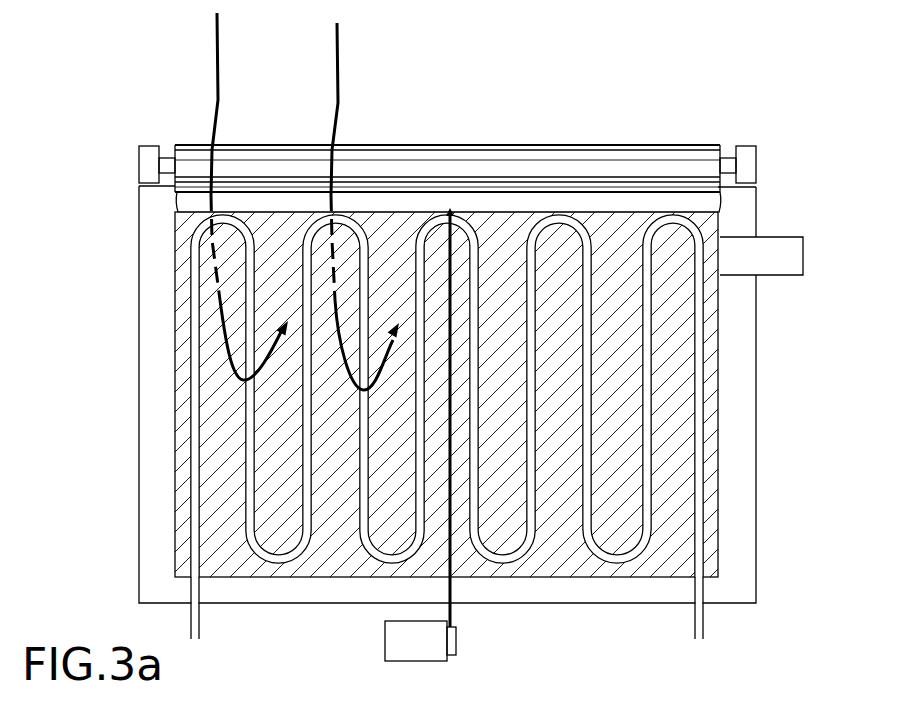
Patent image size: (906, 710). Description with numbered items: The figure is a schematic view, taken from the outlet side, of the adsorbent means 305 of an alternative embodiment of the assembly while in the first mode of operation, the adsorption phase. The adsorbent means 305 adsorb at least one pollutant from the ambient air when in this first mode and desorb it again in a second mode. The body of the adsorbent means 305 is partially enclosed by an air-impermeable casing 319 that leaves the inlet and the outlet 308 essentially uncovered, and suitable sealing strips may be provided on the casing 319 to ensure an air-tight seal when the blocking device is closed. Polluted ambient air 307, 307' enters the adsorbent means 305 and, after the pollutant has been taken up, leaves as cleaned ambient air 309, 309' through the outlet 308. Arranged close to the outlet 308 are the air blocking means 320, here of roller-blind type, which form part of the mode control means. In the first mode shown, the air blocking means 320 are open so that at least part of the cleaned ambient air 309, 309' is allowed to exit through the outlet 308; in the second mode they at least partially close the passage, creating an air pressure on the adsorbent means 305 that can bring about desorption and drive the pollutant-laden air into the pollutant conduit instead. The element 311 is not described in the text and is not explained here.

The adsorbent means 305 is at (667, 418).
The polluted ambient air 307 is at (185, 196).
The polluted ambient air 307' is at (318, 199).
The outlet 308 is at (225, 433).
The cleaned ambient air 309 is at (274, 238).
The cleaned ambient air 309' is at (397, 240).
The inlet pipe 311 is at (198, 622).
The air-impermeable casing 319 is at (753, 215).
The air blocking means 320 is at (187, 197).